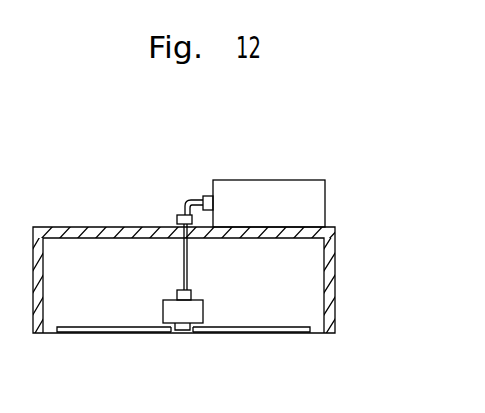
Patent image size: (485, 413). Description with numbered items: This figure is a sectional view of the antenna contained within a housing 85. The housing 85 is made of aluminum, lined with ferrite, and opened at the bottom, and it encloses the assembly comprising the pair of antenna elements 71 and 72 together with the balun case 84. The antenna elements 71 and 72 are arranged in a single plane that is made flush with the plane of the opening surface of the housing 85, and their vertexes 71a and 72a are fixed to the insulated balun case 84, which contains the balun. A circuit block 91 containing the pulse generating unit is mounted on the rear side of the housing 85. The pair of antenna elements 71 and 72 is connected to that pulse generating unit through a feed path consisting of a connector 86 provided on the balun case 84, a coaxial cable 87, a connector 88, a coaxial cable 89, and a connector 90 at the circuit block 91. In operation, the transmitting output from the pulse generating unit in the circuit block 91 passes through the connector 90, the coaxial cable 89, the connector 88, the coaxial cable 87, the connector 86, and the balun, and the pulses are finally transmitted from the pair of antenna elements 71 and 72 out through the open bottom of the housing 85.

The housing 85 is at (335, 259).
The circuit block 91 is at (300, 180).
The coaxial cable 89 is at (188, 197).
The connector 90 is at (205, 197).
The connector 88 is at (177, 215).
The coaxial cable 87 is at (183, 251).
The connector 86 is at (177, 292).
The balun case 84 is at (203, 305).
The antenna element 71 is at (110, 327).
The vertex 71a is at (175, 333).
The antenna element 72 is at (268, 327).
The vertex 72a is at (200, 333).